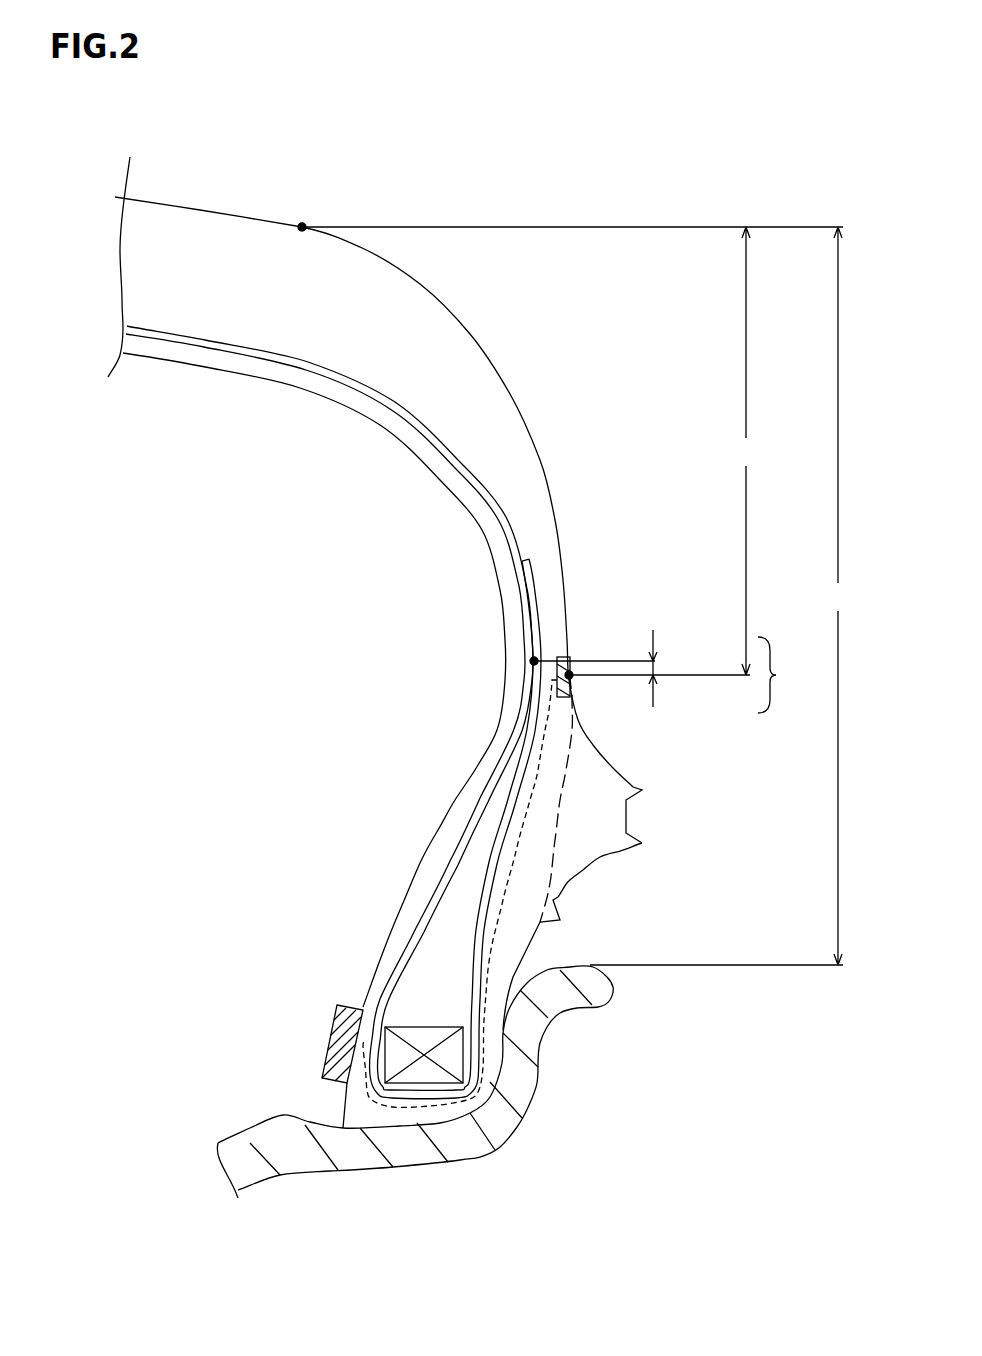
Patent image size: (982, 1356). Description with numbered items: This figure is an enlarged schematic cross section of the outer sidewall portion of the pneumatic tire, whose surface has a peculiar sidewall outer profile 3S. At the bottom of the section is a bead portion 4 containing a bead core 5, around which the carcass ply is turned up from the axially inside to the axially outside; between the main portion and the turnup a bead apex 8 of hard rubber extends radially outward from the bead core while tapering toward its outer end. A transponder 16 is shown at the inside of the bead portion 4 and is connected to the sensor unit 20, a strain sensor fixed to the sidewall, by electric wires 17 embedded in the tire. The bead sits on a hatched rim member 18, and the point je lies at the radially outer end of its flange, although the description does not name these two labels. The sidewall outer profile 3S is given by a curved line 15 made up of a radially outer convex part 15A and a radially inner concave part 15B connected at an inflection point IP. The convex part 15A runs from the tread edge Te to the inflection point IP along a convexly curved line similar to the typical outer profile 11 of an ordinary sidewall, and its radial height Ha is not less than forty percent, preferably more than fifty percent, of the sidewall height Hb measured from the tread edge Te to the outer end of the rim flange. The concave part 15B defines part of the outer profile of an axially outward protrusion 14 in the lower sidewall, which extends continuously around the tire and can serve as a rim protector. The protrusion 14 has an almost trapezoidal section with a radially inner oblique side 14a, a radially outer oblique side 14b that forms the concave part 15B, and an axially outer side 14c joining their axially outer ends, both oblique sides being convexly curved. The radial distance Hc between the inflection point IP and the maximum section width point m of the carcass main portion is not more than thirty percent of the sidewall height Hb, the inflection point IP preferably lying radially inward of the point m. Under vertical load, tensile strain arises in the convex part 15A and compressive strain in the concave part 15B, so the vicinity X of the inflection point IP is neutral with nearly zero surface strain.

The sidewall outer profile 3S is at (478, 345).
The curved line 15 is at (557, 512).
The radially outer convex part 15A is at (505, 390).
The radially inner concave part 15B is at (613, 763).
The radially outer oblique side 14b is at (696, 757).
The axially-outward protrusion 14 is at (598, 835).
The radially inner oblique side 14a is at (585, 877).
The axially outer side 14c is at (628, 815).
The bead apex 8 is at (437, 932).
The outer profile 11 is at (560, 817).
The electric wires 17 is at (410, 1100).
The bead core 5 is at (451, 1057).
The transponder 16 is at (327, 1043).
The bead portion 4 is at (333, 923).
The wheel rim 18 is at (463, 1142).
The rim flange edge je is at (583, 967).
The tread edge Te is at (302, 227).
The sensor unit 20 is at (563, 657).
The maximum section width point m is at (534, 661).
The inflection point IP is at (569, 675).
The radial distance Hc is at (672, 668).
The radial height of the convex part Ha is at (745, 451).
The sidewall height Hb is at (578, 596).
The vicinity of the inflection point X is at (778, 675).